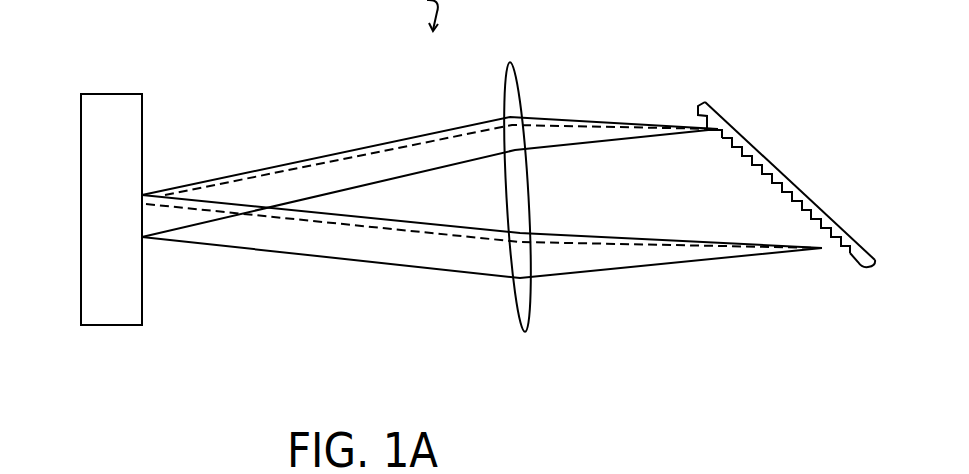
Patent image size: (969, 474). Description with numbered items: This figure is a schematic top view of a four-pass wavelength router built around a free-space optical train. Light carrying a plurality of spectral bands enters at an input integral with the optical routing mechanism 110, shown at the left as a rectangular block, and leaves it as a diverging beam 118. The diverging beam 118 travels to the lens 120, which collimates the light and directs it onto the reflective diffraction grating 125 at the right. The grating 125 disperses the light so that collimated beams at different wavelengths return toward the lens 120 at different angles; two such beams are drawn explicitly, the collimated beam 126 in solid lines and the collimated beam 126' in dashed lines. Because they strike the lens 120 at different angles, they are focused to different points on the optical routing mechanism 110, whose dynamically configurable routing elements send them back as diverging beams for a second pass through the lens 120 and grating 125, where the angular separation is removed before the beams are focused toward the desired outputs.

The optical routing mechanism 110 is at (110, 94).
The diverging beam 118 is at (182, 218).
The lens 120 is at (525, 334).
The reflective diffraction grating 125 is at (705, 102).
The collimated beam 126 is at (482, 181).
The collimated beam 126' is at (484, 173).